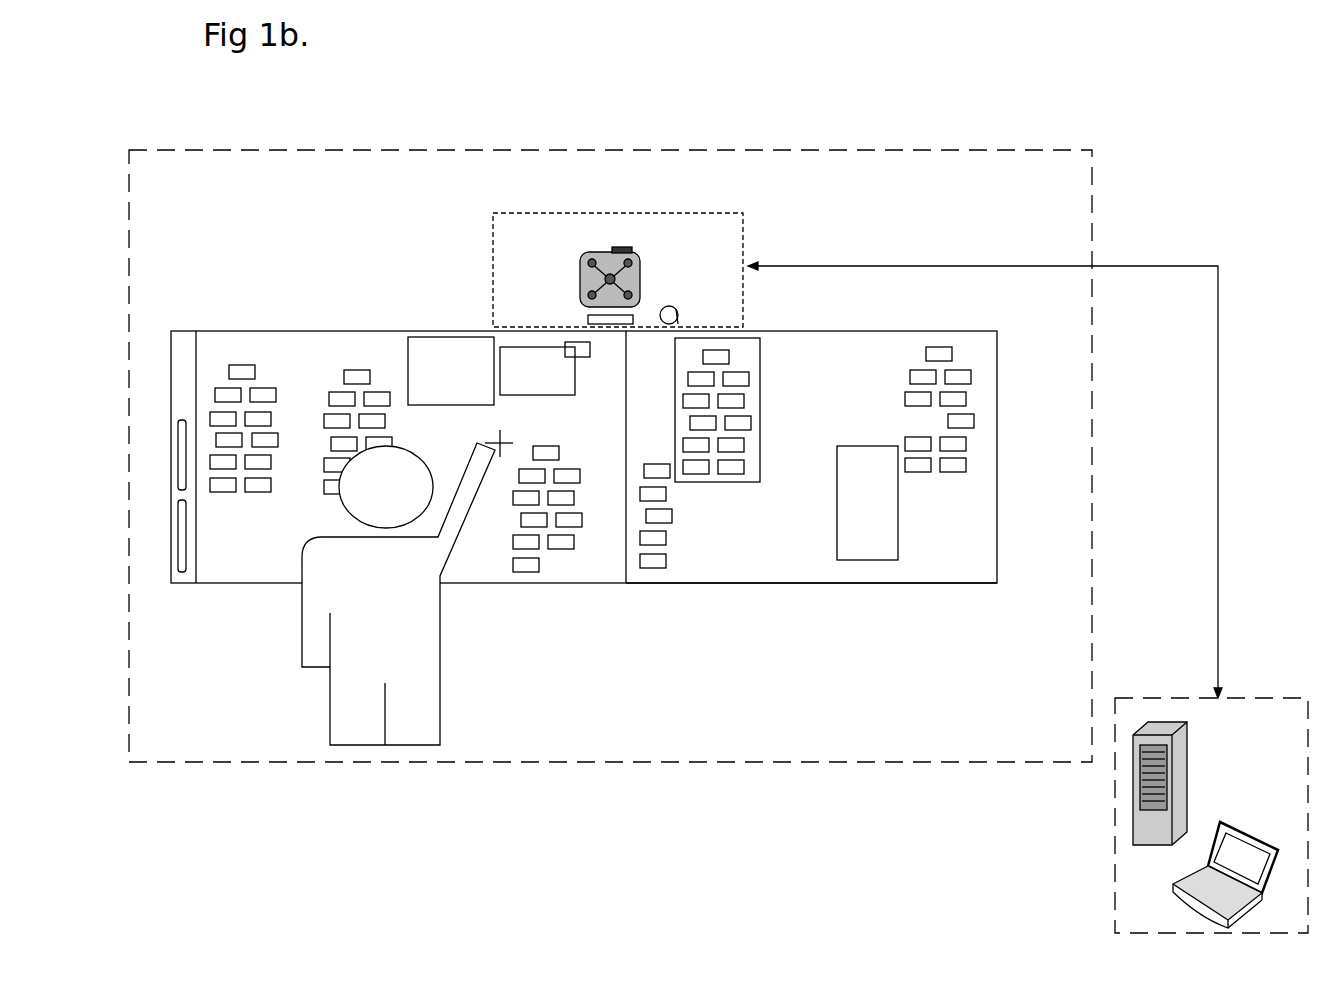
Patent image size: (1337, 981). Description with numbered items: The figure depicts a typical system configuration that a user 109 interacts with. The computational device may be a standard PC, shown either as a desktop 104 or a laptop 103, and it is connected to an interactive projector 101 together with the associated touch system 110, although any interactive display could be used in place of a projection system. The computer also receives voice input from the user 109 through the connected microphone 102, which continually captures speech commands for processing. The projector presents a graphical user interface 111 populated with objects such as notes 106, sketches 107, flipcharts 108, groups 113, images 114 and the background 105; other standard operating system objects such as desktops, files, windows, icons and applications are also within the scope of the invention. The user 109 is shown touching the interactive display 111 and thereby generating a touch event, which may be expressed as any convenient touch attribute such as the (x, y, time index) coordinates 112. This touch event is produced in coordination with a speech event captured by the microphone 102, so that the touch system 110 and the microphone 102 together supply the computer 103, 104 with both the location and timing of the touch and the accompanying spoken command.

The interactive projector 101 is at (641, 262).
The microphone 102 is at (677, 306).
The laptop 103 is at (1228, 818).
The desktop 104 is at (1190, 770).
The background 105 is at (727, 540).
The notes 106 is at (255, 495).
The sketches 107 is at (440, 333).
The flipcharts 108 is at (832, 545).
The user 109 is at (300, 635).
The touch system 110 is at (587, 315).
The graphical user interface 111 is at (997, 508).
The (x, y, time index) coordinates 112 is at (543, 420).
The groups 113 is at (760, 380).
The images 114 is at (578, 368).